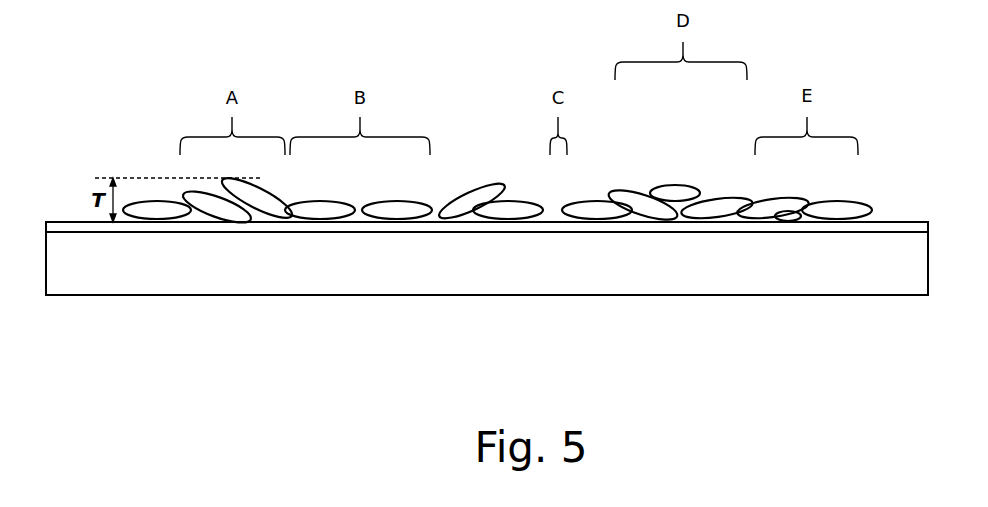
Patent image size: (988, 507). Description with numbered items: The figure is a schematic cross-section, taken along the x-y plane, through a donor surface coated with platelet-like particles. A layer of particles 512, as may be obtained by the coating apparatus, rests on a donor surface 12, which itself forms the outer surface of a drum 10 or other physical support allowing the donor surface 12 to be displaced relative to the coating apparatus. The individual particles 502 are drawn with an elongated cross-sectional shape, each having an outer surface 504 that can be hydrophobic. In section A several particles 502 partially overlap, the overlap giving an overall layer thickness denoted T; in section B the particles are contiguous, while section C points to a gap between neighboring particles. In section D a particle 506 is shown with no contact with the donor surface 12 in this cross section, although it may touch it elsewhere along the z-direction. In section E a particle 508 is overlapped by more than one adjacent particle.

The drum 10 is at (175, 272).
The donor surface 12 is at (67, 222).
The particles 502 is at (472, 192).
The outer surface 504 is at (495, 188).
The particle 506 is at (666, 185).
The particle 508 is at (792, 223).
The layer of particles 512 is at (865, 188).